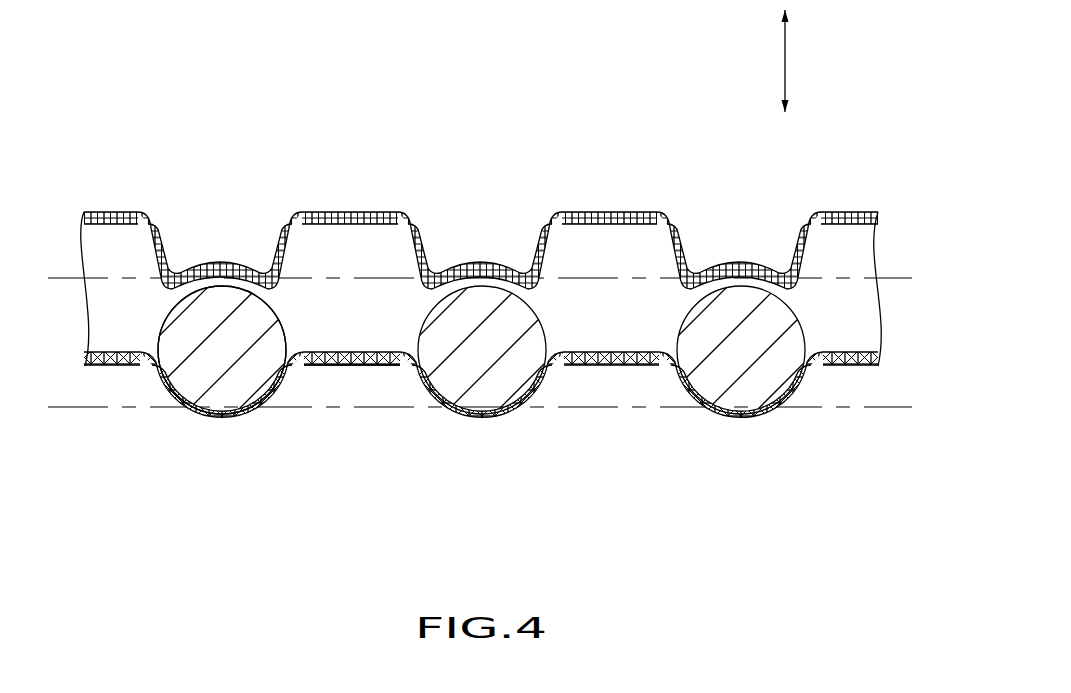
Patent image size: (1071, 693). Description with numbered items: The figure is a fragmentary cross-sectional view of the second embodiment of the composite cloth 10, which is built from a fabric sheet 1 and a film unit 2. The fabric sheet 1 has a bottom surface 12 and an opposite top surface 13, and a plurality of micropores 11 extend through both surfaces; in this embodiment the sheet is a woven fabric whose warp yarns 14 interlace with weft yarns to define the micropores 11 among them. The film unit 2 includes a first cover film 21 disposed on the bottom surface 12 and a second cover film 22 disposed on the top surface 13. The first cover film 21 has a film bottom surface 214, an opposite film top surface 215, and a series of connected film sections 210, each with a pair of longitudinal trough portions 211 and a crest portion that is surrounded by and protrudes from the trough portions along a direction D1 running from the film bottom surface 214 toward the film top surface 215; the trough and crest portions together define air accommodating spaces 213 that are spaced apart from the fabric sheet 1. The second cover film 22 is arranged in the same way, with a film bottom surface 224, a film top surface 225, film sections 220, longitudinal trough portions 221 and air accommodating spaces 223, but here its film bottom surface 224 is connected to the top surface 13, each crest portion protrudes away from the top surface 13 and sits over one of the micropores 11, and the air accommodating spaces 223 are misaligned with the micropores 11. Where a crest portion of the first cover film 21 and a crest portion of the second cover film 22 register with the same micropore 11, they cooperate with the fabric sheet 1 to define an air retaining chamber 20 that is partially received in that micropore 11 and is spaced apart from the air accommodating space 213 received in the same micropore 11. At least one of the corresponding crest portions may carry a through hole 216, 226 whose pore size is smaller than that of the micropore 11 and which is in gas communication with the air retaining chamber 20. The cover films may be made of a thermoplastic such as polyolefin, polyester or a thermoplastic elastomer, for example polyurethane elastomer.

The composite cloth 10 is at (480, 214).
The fabric sheet 1 is at (807, 328).
The micropores 11 is at (577, 338).
The bottom surface 12 is at (215, 410).
The top surface 13 is at (191, 270).
The warp yarns 14 is at (225, 357).
The film unit 2 is at (832, 200).
The air retaining chamber 20 is at (362, 298).
The first cover film 21 is at (188, 412).
The film sections 210 is at (385, 368).
The longitudinal trough portions 211 is at (253, 407).
The air accommodating spaces 213 is at (363, 388).
The film bottom surface 214 is at (123, 365).
The film top surface 215 is at (127, 353).
The through hole 216 is at (347, 365).
The second cover film 22 is at (133, 207).
The film sections 220 is at (317, 210).
The longitudinal trough portions 221 is at (482, 262).
The air accommodating spaces 223 is at (225, 248).
The film bottom surface 224 is at (115, 225).
The film top surface 225 is at (113, 210).
The through hole 226 is at (343, 219).
The direction D1 is at (808, 61).